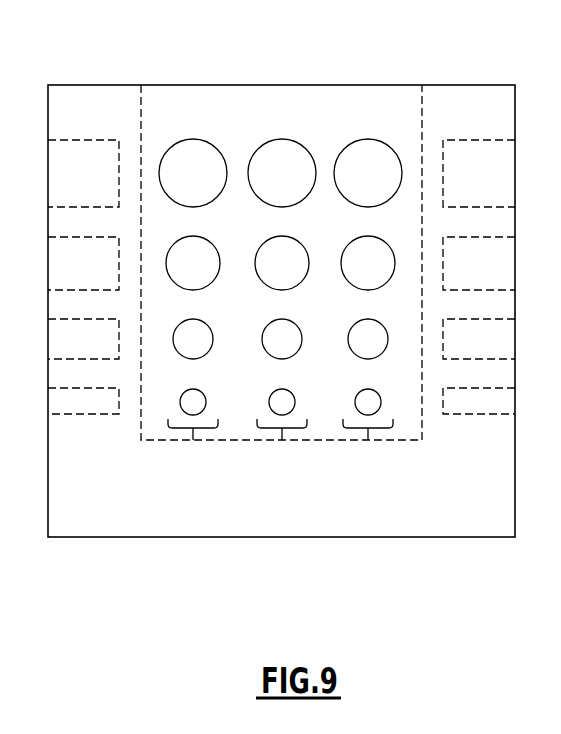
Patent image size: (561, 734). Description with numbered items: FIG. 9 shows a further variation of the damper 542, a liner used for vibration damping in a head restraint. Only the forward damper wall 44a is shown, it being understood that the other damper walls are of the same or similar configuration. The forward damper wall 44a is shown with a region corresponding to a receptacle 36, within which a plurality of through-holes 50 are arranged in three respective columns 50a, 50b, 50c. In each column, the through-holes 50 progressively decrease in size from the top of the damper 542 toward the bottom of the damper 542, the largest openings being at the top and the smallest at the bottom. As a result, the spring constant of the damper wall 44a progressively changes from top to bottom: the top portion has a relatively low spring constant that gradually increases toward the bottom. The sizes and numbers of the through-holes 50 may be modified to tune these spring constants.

The damper 542 is at (461, 552).
The forward damper wall 44a is at (129, 117).
The receptacle 36 is at (371, 114).
The through-holes 50 is at (289, 268).
The first column of through-holes 50a is at (193, 440).
The second column of through-holes 50b is at (282, 440).
The third column of through-holes 50c is at (368, 440).